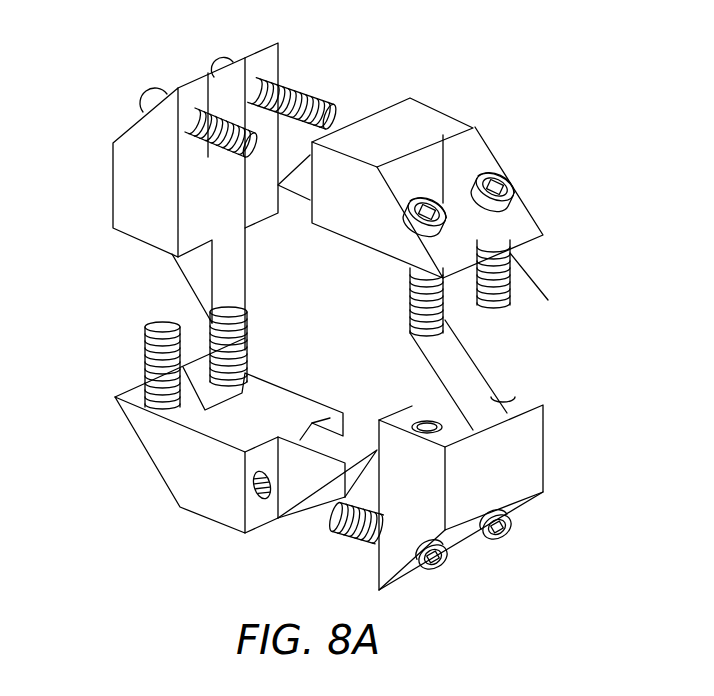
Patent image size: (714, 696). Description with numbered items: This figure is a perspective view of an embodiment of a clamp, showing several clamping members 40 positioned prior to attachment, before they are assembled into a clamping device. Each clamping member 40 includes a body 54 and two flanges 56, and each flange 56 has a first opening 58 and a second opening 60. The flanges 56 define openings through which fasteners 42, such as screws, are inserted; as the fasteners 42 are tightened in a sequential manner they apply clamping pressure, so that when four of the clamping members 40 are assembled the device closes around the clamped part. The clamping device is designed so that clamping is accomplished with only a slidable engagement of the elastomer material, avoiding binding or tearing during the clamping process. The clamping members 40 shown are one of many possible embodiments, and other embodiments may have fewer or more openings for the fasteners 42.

The clamping member 40 is at (92, 158).
The fastener 42 is at (283, 86).
The body 54 is at (460, 366).
The flange 56 is at (192, 92).
The first opening 58 is at (418, 194).
The second opening 60 is at (508, 398).